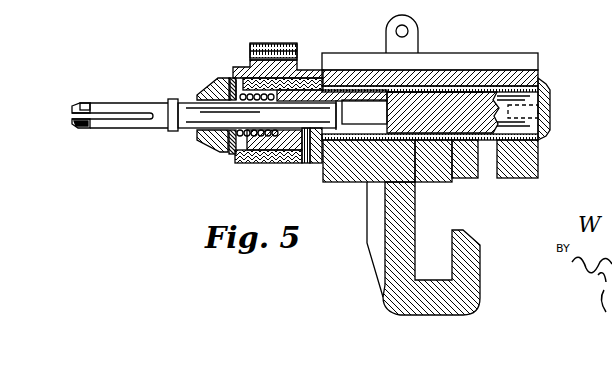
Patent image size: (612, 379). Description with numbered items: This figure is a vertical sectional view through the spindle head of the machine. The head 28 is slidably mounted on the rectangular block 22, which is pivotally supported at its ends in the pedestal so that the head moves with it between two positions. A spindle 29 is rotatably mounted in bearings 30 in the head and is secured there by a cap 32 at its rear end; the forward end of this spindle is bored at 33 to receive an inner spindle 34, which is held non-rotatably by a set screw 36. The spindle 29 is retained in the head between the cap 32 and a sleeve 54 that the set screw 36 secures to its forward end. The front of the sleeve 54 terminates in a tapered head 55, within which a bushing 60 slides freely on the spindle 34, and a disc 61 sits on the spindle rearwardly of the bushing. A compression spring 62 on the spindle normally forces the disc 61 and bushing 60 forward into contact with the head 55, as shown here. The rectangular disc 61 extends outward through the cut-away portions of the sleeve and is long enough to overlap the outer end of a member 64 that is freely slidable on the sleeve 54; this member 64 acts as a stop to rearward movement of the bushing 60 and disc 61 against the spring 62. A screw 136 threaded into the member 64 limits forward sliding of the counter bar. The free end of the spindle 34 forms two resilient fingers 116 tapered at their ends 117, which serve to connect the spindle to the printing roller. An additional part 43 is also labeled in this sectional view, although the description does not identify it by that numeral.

The rectangular block 22 is at (440, 213).
The head 28 is at (338, 178).
The spindle 29 is at (418, 105).
The bearings 30 is at (358, 82).
The cap 32 is at (549, 90).
The bore 33 is at (361, 115).
The spindle 34 is at (188, 131).
The set screw 36 is at (307, 161).
The plunger 43 is at (448, 100).
The sleeve 54 is at (309, 74).
The tapered head 55 is at (210, 151).
The bushing 60 is at (200, 96).
The disc 61 is at (232, 93).
The compression spring 62 is at (231, 140).
The member 64 is at (252, 160).
The resilient fingers 116 is at (100, 125).
The tapered ends 117 is at (78, 105).
The screw 136 is at (284, 56).